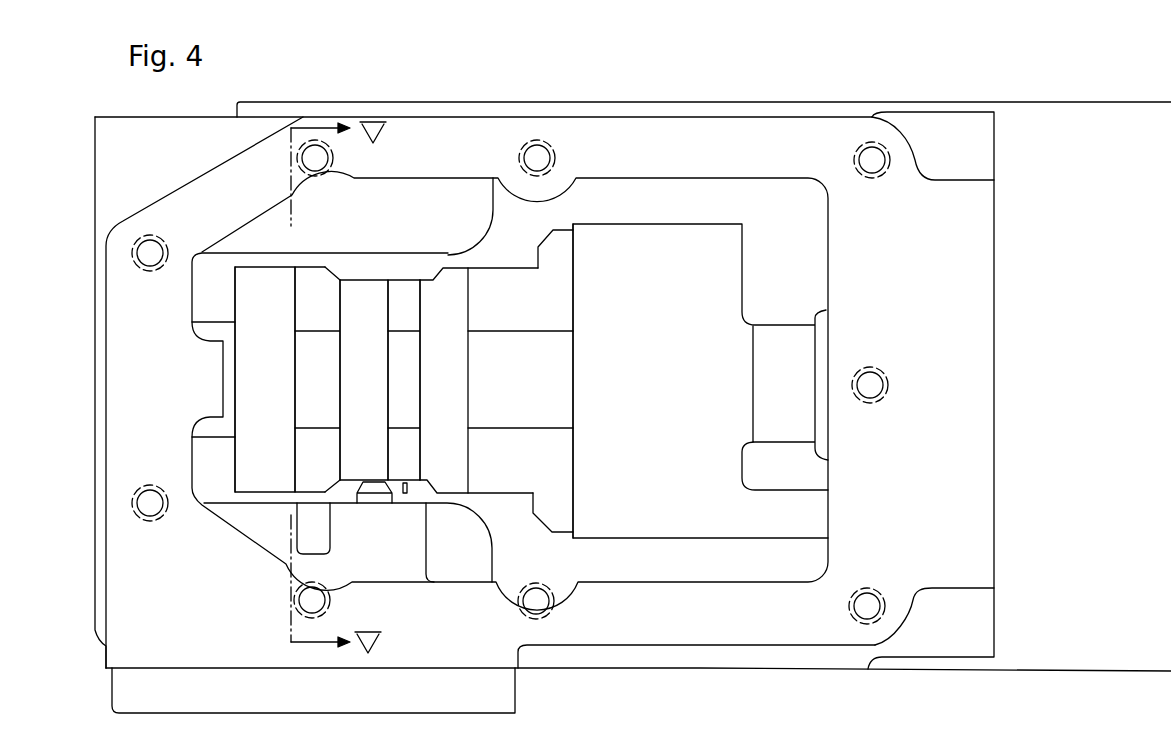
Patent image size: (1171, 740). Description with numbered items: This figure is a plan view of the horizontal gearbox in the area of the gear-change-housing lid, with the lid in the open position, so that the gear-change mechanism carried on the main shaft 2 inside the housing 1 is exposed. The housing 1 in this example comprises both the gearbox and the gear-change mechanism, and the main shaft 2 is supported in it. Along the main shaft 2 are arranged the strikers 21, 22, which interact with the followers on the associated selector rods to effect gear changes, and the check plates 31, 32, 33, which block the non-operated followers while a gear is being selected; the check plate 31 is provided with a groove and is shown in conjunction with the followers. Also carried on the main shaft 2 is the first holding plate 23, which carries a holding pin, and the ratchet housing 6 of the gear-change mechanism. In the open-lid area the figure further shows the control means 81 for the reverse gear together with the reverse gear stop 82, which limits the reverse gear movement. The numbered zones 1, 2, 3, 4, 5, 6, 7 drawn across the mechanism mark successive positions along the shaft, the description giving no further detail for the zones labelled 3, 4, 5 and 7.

The housing 1 is at (257, 379).
The main shaft 2 is at (314, 379).
The chamber 3 is at (358, 380).
The chamber 4 is at (403, 380).
The chamber 5 is at (439, 380).
The ratchet housing 6 is at (656, 216).
The chamber 7 is at (605, 381).
The striker 21 is at (364, 296).
The striker 22 is at (443, 300).
The first holding plate 23 is at (268, 292).
The check plate 31 is at (313, 284).
The check plate 32 is at (407, 291).
The check plate 33 is at (501, 282).
The control means 81 is at (405, 494).
The reverse gear stop 82 is at (375, 498).